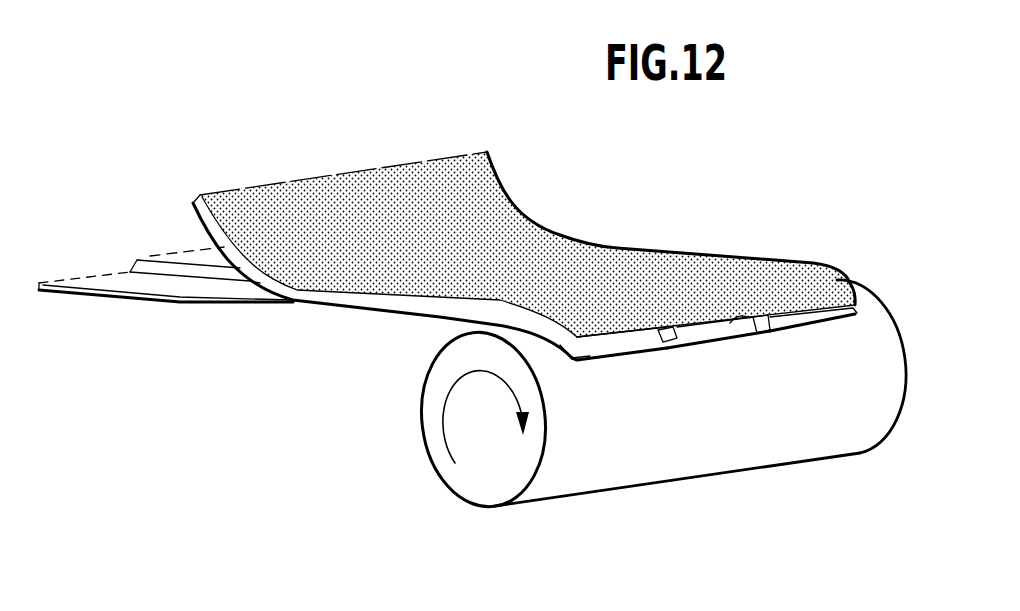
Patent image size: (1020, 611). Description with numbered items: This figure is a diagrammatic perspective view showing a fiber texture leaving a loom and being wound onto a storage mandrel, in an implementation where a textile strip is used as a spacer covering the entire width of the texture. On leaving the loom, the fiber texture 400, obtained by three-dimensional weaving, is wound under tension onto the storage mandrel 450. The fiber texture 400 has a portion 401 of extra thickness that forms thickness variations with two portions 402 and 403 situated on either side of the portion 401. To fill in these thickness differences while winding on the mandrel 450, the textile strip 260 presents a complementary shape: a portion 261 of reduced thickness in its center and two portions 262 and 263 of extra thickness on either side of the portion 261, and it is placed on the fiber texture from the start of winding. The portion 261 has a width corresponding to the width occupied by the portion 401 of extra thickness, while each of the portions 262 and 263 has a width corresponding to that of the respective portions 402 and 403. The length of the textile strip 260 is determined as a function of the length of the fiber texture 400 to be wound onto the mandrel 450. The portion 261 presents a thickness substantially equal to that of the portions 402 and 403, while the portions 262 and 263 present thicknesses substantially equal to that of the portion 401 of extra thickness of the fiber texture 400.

The textile strip 260 is at (675, 297).
The portion of reduced thickness 261 is at (752, 313).
The portion of extra thickness 262 is at (600, 358).
The portion of extra thickness 263 is at (859, 300).
The fiber texture 400 is at (214, 309).
The portion of extra thickness 401 is at (707, 328).
The portion 402 is at (617, 345).
The portion 403 is at (807, 327).
The storage mandrel 450 is at (778, 446).